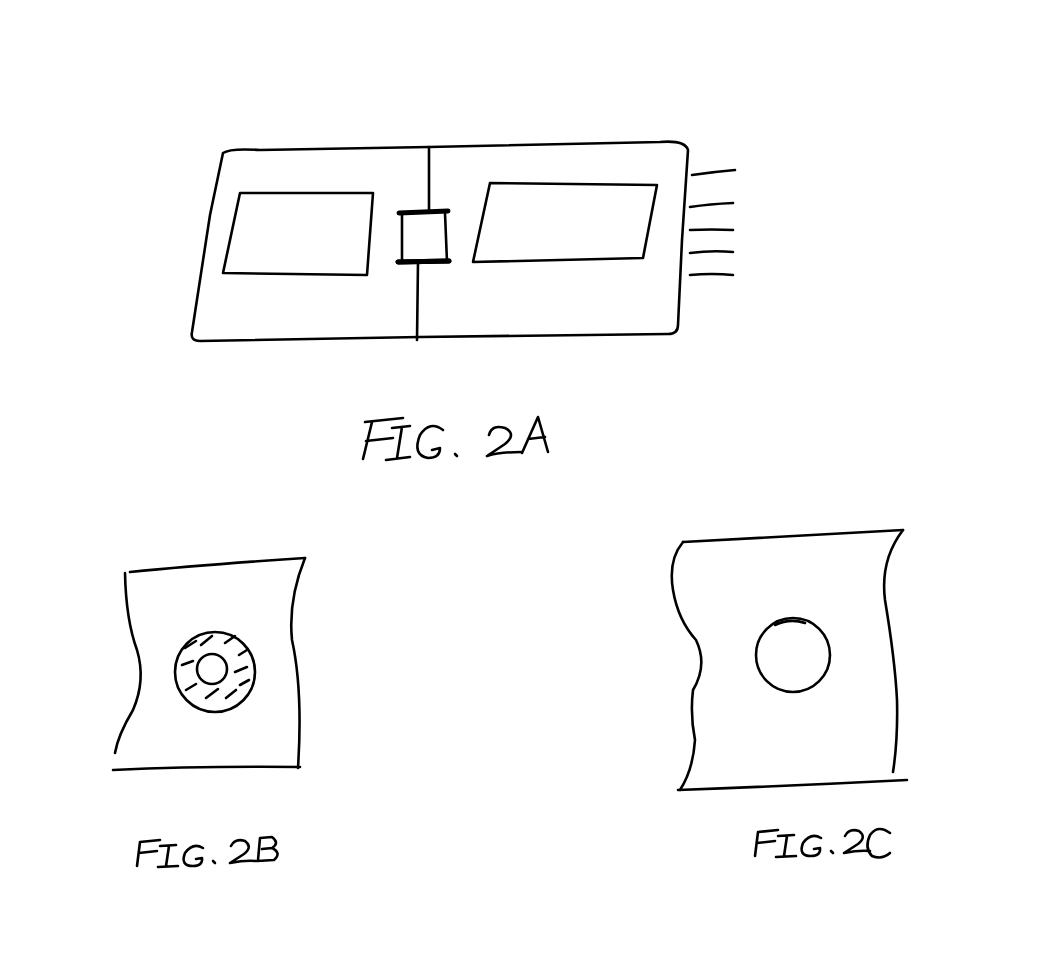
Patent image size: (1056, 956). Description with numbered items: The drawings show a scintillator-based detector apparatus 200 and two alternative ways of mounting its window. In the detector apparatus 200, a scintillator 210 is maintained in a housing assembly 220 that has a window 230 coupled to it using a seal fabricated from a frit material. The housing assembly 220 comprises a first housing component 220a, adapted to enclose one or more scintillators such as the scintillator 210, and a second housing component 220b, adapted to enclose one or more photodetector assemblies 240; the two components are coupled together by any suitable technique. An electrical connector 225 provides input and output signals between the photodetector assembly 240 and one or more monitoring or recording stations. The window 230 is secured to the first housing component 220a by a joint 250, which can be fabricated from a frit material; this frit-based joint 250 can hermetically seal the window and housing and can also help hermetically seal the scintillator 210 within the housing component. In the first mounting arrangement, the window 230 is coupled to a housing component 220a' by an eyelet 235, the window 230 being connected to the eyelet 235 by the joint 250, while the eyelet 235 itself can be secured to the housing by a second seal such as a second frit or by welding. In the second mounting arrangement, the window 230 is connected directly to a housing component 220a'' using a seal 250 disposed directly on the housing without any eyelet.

In FIG. 2A, the scintillator-based detector apparatus 200 is at (719, 19).
In FIG. 2A, the housing assembly 220 is at (440, 188).
In FIG. 2A, the first housing component 220a is at (326, 108).
In FIG. 2A, the second housing component 220b is at (558, 113).
In FIG. 2A, the electrical connector 225 is at (774, 186).
In FIG. 2A, the scintillator 210 is at (298, 234).
In FIG. 2A, the photodetector assembly 240 is at (565, 238).
In FIG. 2A, the window 230 is at (423, 236).
In FIG. 2B, the window 230 is at (231, 633).
In FIG. 2C, the window 230 is at (819, 595).
In FIG. 2A, the joint 250 is at (441, 277).
In FIG. 2B, the joint 250 is at (229, 703).
In FIG. 2C, the joint 250 is at (812, 672).
In FIG. 2B, the eyelet 235 is at (291, 672).
In FIG. 2B, the housing component 220a' is at (280, 664).
In FIG. 2C, the housing component 220a'' is at (846, 623).